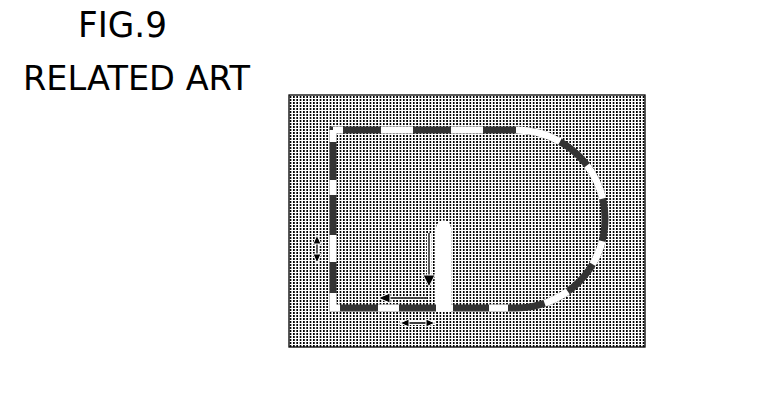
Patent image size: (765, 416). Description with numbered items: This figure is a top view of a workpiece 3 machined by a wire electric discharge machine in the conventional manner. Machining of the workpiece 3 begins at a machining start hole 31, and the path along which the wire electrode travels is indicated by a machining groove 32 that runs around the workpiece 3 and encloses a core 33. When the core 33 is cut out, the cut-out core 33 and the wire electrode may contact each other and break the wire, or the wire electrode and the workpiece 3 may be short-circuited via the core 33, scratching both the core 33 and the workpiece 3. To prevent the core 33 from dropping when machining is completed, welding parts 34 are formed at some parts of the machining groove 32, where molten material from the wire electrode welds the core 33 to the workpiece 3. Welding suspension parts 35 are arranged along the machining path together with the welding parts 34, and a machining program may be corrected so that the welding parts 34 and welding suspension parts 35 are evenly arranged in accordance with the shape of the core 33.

The workpiece 3 is at (645, 104).
The machining start hole 31 is at (445, 222).
The machining groove 32 is at (448, 248).
The core 33 is at (577, 240).
The welding part 34 is at (420, 330).
The welding suspension part 35 is at (313, 248).